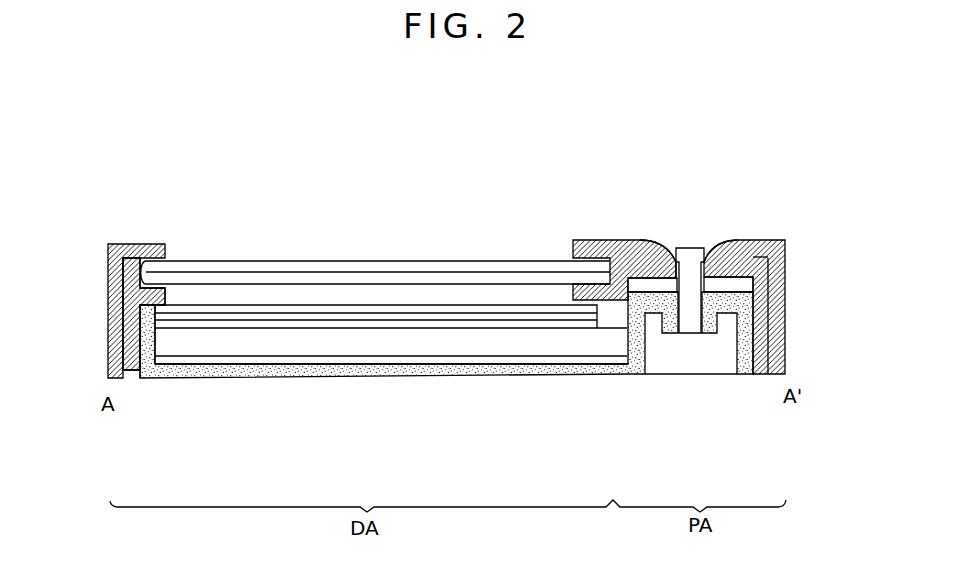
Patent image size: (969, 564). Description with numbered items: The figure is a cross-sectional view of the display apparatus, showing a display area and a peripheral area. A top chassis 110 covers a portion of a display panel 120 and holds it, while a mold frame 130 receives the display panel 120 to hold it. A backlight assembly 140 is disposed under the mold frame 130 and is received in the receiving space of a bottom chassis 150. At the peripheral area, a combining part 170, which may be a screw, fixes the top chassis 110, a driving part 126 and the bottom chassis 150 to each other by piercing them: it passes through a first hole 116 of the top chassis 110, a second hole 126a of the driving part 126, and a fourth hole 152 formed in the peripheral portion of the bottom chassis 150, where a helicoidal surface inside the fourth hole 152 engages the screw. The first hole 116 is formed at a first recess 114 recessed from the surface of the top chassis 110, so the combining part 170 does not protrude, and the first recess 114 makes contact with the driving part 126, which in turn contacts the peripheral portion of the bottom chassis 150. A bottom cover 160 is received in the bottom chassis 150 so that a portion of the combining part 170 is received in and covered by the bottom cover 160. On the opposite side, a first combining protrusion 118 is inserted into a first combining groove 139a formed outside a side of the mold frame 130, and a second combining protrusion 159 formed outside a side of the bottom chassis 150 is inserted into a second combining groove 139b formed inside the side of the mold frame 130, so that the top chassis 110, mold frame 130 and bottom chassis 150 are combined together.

The top chassis 110 is at (772, 374).
The first recess 114 is at (669, 257).
The first hole 116 is at (711, 255).
The first combining protrusion 118 is at (124, 294).
The display panel 120 is at (293, 261).
The driving part 126 is at (648, 283).
The second hole 126a is at (704, 285).
The mold frame 130 is at (623, 248).
The first combining groove 139a is at (140, 262).
The second combining groove 139b is at (138, 331).
The backlight assembly 140 is at (214, 305).
The bottom chassis 150 is at (606, 368).
The fourth hole 152 is at (742, 316).
The second combining protrusion 159 is at (134, 338).
The bottom cover 160 is at (692, 374).
The combining part 170 is at (696, 246).